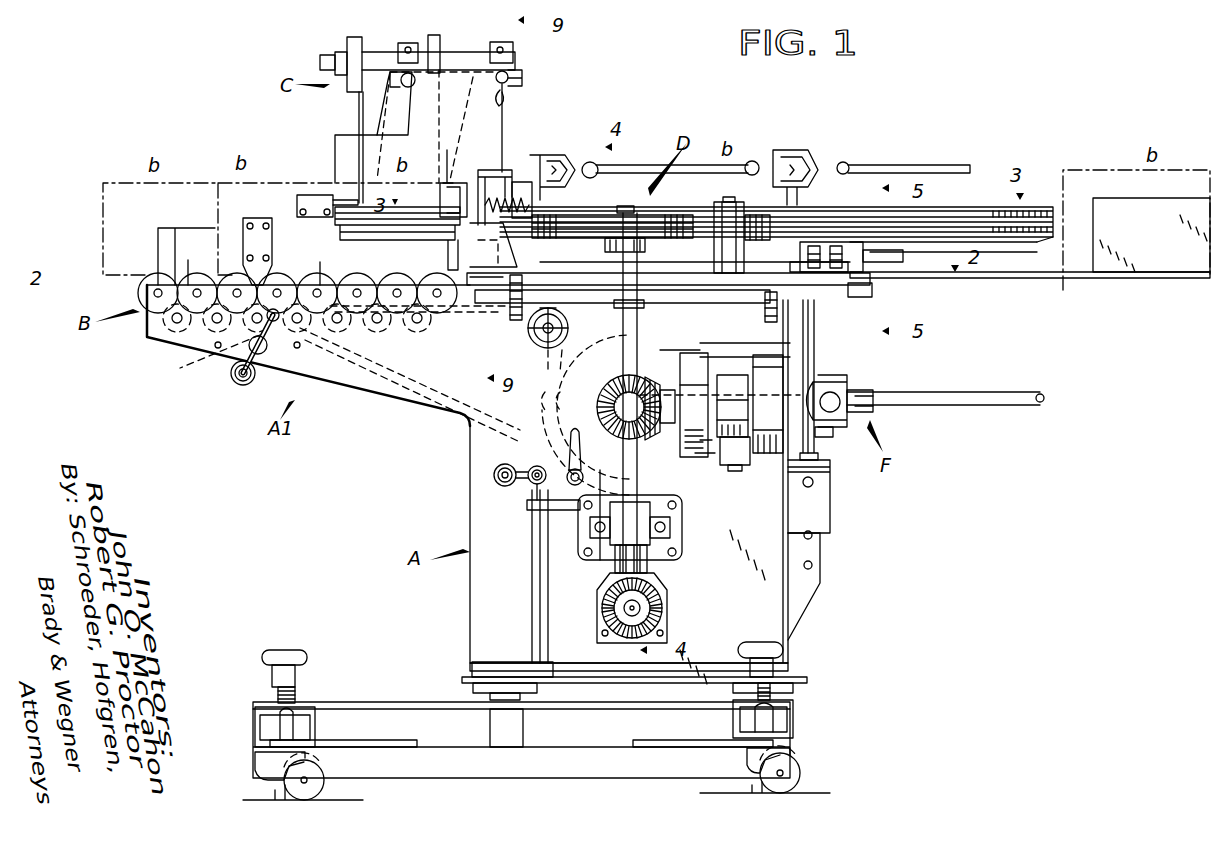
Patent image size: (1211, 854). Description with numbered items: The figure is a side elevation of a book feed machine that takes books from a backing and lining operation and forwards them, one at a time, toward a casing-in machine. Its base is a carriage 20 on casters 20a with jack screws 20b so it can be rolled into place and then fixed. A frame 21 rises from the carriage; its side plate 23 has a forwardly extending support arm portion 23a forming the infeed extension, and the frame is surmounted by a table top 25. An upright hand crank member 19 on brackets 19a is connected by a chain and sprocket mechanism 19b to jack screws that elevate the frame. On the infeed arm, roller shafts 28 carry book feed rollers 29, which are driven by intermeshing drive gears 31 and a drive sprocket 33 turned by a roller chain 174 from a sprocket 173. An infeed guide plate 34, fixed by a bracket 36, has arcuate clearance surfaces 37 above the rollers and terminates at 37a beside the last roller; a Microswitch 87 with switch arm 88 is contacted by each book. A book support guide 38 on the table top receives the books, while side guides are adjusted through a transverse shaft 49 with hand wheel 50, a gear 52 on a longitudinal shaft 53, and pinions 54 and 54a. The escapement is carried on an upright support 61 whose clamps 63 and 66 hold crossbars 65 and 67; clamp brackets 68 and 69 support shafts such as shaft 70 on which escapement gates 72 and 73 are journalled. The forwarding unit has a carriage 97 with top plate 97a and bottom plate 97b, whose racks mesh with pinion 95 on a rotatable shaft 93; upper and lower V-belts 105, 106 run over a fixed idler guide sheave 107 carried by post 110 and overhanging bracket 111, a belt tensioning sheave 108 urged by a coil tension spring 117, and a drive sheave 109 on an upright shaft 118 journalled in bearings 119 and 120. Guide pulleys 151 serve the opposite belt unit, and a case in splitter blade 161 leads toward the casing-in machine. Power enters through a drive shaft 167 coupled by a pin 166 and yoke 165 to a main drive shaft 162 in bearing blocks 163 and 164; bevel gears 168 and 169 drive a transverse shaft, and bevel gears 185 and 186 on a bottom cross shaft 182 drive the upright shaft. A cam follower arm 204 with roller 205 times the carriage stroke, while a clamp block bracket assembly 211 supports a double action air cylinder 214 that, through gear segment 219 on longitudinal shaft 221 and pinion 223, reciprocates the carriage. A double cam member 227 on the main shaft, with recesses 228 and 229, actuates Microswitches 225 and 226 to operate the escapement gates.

The hand crank member 19 is at (495, 476).
The brackets 19a is at (528, 512).
The chain and sprocket mechanism 19b is at (575, 683).
The carriage 20 is at (410, 672).
The casters 20a is at (325, 770).
The jack screws 20b is at (286, 650).
The frame 21 is at (464, 586).
The side plate 23 is at (470, 518).
The support arm portion 23a is at (370, 398).
The table top 25 is at (852, 290).
The roller shafts 28 is at (185, 342).
The book feed rollers 29 is at (140, 285).
The drive gears 31 is at (340, 328).
The drive sprocket 33 is at (290, 350).
The infeed guide plate 34 is at (158, 228).
The bracket 36 is at (240, 230).
The arcuate clearance surfaces 37 is at (188, 260).
The guide plate termination 37a is at (470, 262).
The book support guide 38 is at (990, 280).
The transverse shaft 49 is at (528, 336).
The hand wheel 50 is at (530, 340).
The gear 52 is at (555, 285).
The longitudinal shaft 53 is at (712, 305).
The pinion 54 is at (528, 330).
The pinion 54a is at (765, 318).
The upright support 61 is at (496, 122).
The clamp 63 is at (522, 82).
The crossbar 65 is at (503, 102).
The clamp 66 is at (385, 70).
The crossbar 67 is at (416, 86).
The clamp bracket 68 is at (495, 42).
The clamp bracket 69 is at (410, 42).
The longitudinal shaft 70 is at (320, 62).
The escapement gate 72 is at (349, 111).
The escapement gate 73 is at (450, 183).
The Microswitch 87 is at (298, 200).
The switch arm 88 is at (348, 198).
The rotatable shaft 93 is at (655, 262).
The pinion 95 is at (852, 293).
The carriage 97 is at (952, 205).
The top plate 97a is at (1040, 208).
The bottom plate 97b is at (1037, 242).
The upper V-belt 105 is at (1050, 245).
The lower V-belt 106 is at (1056, 230).
The fixed idler guide sheave 107 is at (758, 212).
The belt tensioning sheave 108 is at (600, 248).
The drive sheave 109 is at (608, 215).
The post 110 is at (758, 168).
The overhanging bracket 111 is at (720, 205).
The coil tension spring 117 is at (498, 195).
The upright shaft 118 is at (630, 206).
The bearing 119 is at (620, 300).
The bearing 120 is at (680, 545).
The guide pulleys 151 is at (560, 340).
The case in splitter blade 161 is at (1168, 255).
The main drive shaft 162 is at (670, 405).
The bearing block 163 is at (700, 445).
The bearing block 164 is at (762, 458).
The yoke 165 is at (818, 380).
The pin 166 is at (838, 430).
The drive shaft 167 is at (1015, 382).
The bevel gear 168 is at (680, 440).
The bevel gear 169 is at (610, 378).
The sprocket 173 is at (525, 452).
The roller chain 174 is at (432, 382).
The bottom cross shaft 182 is at (640, 612).
The bevel gear 185 is at (665, 600).
The bevel gear 186 is at (668, 570).
The cam follower arm 204 is at (542, 358).
The cam follower roller 205 is at (540, 412).
The clamp block bracket assembly 211 is at (822, 570).
The double action air cylinder 214 is at (832, 508).
The gear segment 219 is at (815, 328).
The longitudinal shaft 221 is at (812, 352).
The pinion 223 is at (815, 240).
The Microswitch 225 is at (735, 465).
The Microswitch 226 is at (742, 470).
The double cam member 227 is at (735, 378).
The recess 228 is at (705, 440).
The recess 229 is at (740, 386).